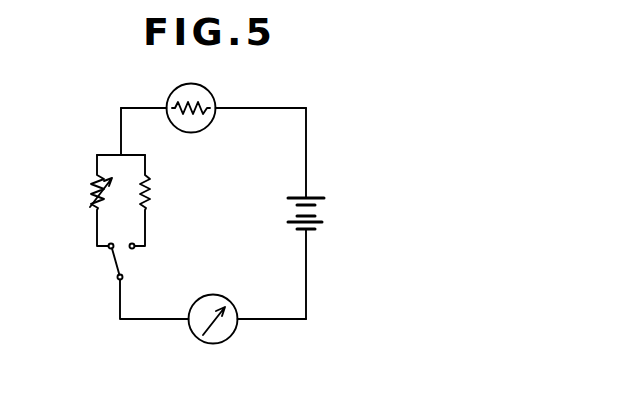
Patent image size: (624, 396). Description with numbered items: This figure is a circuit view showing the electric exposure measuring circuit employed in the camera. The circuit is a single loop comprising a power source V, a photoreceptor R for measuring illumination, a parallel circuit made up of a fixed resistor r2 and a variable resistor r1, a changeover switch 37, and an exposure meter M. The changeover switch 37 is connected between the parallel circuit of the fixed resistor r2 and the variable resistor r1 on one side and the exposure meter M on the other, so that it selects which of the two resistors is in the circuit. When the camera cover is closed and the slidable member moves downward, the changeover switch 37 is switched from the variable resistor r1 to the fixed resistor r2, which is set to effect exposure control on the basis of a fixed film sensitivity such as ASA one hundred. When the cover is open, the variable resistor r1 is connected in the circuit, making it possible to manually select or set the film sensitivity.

The photoreceptor R is at (205, 97).
The variable resistor r1 is at (87, 195).
The fixed resistor r2 is at (153, 199).
The changeover switch 37 is at (115, 265).
The power source V is at (323, 216).
The exposure meter M is at (223, 337).